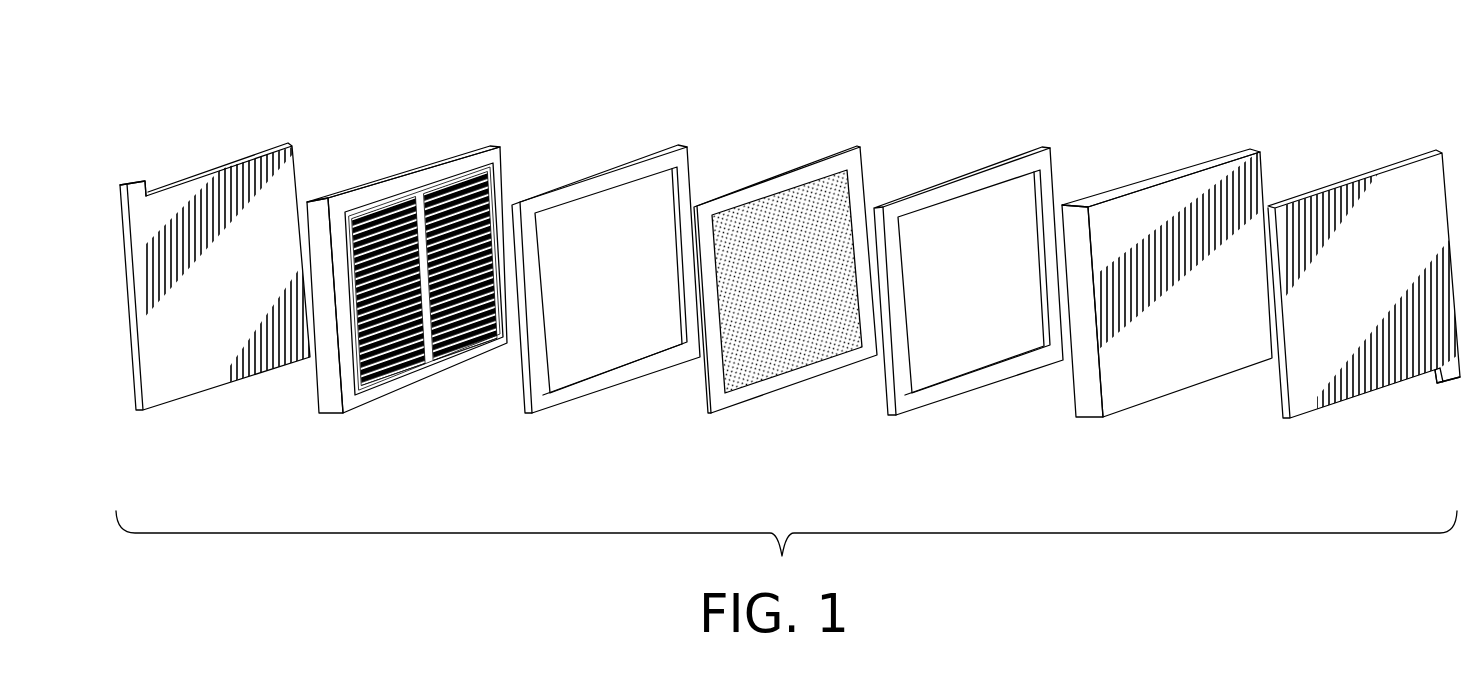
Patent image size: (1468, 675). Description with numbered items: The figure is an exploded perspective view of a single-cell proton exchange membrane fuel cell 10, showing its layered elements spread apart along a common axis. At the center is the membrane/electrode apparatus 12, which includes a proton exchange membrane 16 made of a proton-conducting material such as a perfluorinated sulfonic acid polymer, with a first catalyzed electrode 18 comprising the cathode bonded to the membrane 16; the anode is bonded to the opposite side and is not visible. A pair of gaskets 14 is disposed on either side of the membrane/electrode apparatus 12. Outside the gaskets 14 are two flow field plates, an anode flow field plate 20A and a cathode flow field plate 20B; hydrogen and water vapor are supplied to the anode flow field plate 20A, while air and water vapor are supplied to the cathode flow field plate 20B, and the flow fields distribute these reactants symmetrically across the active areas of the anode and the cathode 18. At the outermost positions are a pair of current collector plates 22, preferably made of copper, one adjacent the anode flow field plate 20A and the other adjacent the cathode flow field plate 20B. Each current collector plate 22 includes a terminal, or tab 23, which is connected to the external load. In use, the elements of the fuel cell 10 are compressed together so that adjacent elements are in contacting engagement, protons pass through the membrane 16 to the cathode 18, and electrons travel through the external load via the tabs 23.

The PEM fuel cell 10 is at (910, 72).
The membrane/electrode apparatus 12 is at (785, 271).
The gaskets 14 is at (583, 180).
The proton exchange membrane 16 is at (802, 167).
The catalyzed electrode 18 is at (782, 358).
The anode flow field plate 20A is at (392, 178).
The cathode flow field plate 20B is at (1145, 186).
The current collector plates 22 is at (211, 172).
The tab 23 is at (124, 182).